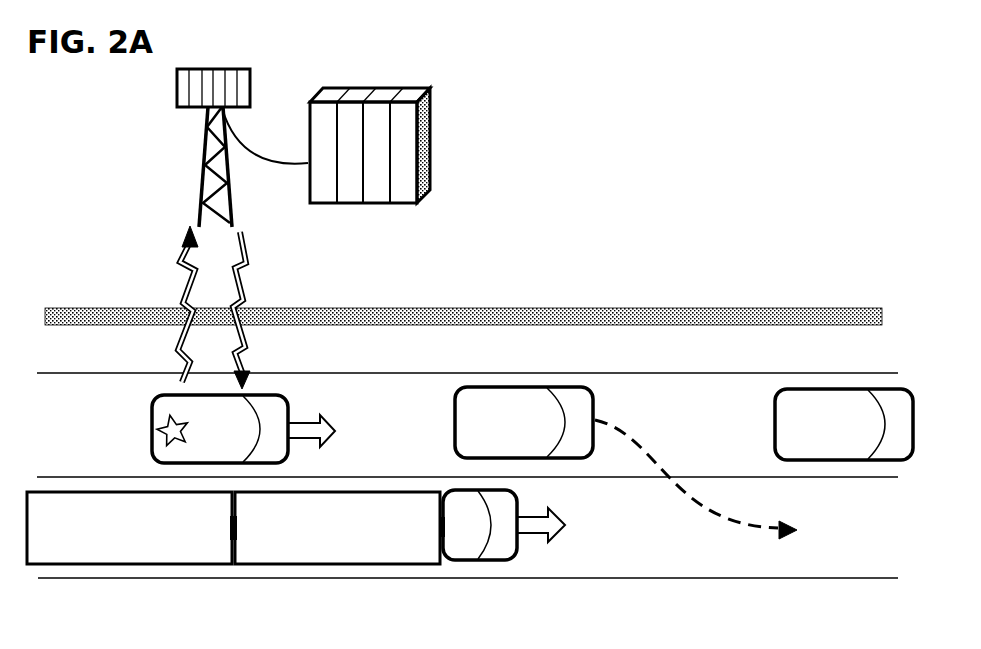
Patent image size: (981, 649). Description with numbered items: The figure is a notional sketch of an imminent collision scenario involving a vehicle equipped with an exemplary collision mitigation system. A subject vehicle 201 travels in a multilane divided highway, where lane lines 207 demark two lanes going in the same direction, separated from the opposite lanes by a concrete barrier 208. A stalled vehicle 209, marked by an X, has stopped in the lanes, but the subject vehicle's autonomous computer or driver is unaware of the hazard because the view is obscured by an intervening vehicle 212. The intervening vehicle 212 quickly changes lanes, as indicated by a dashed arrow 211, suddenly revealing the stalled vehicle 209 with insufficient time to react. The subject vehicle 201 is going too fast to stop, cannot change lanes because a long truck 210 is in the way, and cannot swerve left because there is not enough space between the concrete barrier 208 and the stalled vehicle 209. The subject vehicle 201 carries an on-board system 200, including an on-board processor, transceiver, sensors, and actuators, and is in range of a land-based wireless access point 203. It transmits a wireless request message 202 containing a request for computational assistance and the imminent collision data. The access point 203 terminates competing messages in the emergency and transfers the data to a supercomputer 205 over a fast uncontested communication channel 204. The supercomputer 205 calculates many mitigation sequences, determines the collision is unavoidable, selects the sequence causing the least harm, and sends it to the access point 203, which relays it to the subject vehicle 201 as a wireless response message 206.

The on-board system 200 is at (194, 516).
The subject vehicle 201 is at (185, 463).
The wireless request message 202 is at (183, 290).
The land-based wireless access point 203 is at (178, 103).
The fast uncontested communication channel 204 is at (262, 148).
The supercomputer 205 is at (433, 127).
The wireless response message 206 is at (242, 288).
The lane lines 207 is at (655, 372).
The concrete barrier 208 is at (736, 307).
The stalled vehicle 209 is at (835, 387).
The long truck 210 is at (340, 566).
The dashed arrow 211 is at (720, 527).
The intervening vehicle 212 is at (503, 387).